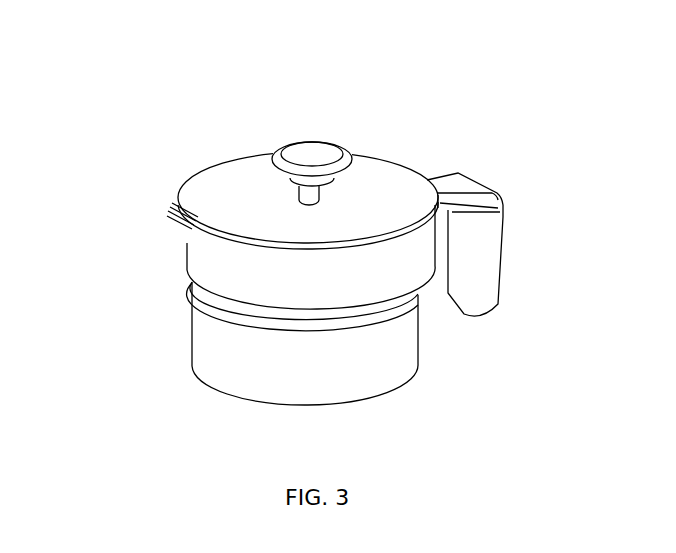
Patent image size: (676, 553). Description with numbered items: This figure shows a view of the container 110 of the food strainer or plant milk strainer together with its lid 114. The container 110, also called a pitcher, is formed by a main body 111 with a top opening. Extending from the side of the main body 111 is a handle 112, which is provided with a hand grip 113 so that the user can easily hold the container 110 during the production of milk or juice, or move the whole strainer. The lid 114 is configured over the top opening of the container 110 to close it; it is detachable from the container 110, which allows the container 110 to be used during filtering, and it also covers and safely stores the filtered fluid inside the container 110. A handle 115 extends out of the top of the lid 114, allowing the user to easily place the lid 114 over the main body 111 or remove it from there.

The container 110 is at (125, 107).
The main body 111 is at (187, 243).
The handle 112 is at (471, 186).
The hand grip 113 is at (487, 267).
The lid 114 is at (214, 178).
The handle 115 is at (318, 141).